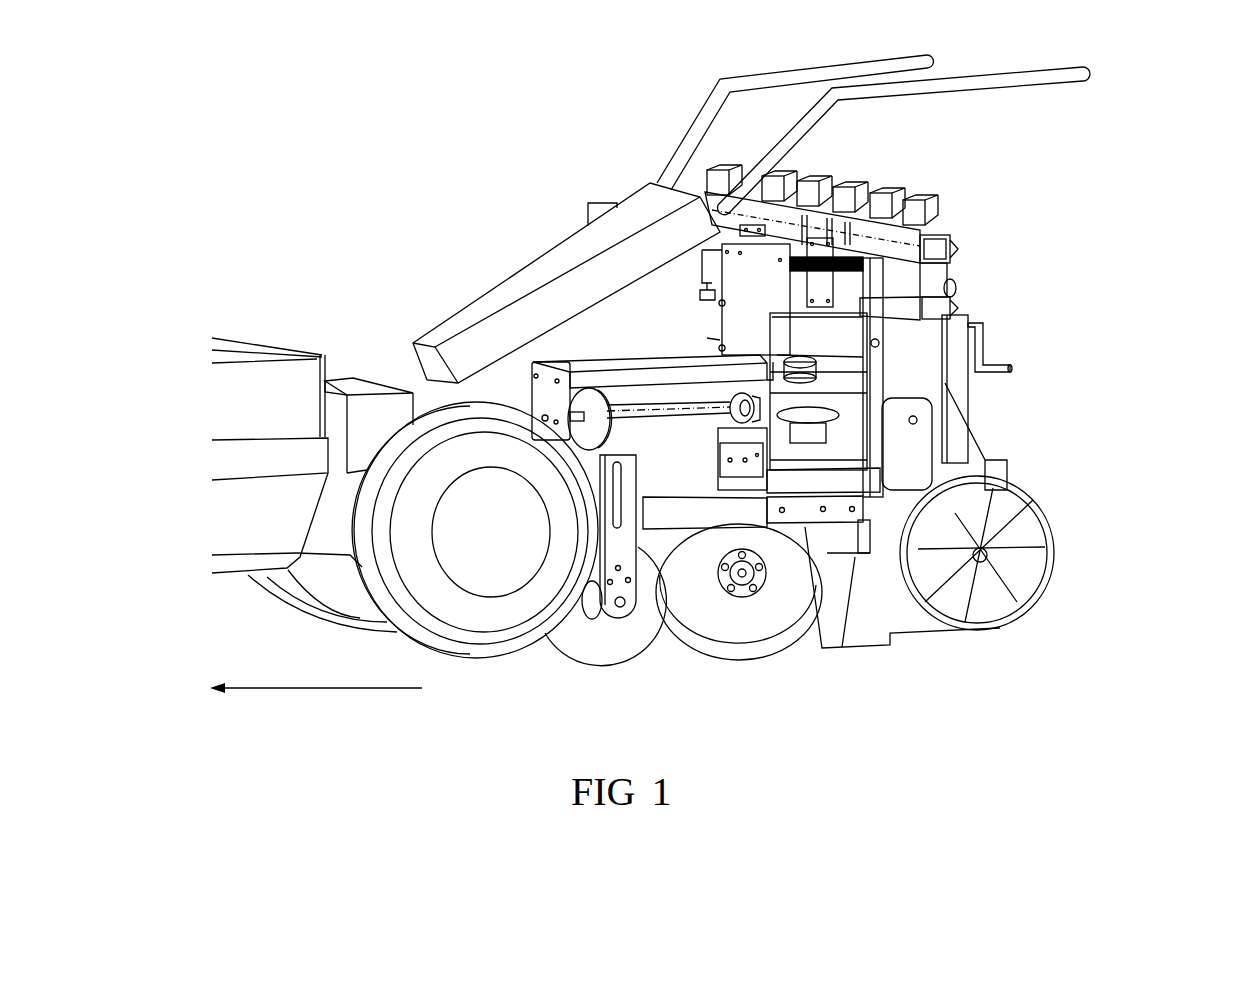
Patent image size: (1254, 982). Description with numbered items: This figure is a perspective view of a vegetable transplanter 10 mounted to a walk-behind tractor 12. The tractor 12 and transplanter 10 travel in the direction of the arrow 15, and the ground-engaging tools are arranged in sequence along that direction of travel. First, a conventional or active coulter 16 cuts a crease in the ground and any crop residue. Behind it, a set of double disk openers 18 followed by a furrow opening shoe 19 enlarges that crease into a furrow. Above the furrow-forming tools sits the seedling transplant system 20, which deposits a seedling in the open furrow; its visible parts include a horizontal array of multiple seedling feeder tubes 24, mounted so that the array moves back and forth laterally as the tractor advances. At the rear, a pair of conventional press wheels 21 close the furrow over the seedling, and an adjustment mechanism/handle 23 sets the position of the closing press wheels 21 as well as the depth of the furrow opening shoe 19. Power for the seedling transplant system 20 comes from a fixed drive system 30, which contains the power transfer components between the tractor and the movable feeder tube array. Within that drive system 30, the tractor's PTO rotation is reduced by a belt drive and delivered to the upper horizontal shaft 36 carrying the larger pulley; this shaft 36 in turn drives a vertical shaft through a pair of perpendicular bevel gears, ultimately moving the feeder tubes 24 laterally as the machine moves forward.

The vegetable transplanter 10 is at (1210, 193).
The walk-behind tractor 12 is at (186, 311).
The arrow 15 is at (316, 707).
The coulter 16 is at (580, 635).
The double disk openers 18 is at (727, 622).
The furrow opening shoe 19 is at (888, 635).
The seedling transplant system 20 is at (1012, 295).
The press wheels 21 is at (1048, 573).
The adjustment mechanism/handle 23 is at (1013, 370).
The seedling feeder tubes 24 is at (942, 232).
The drive system 30 is at (1037, 444).
The upper horizontal shaft 36 is at (643, 420).